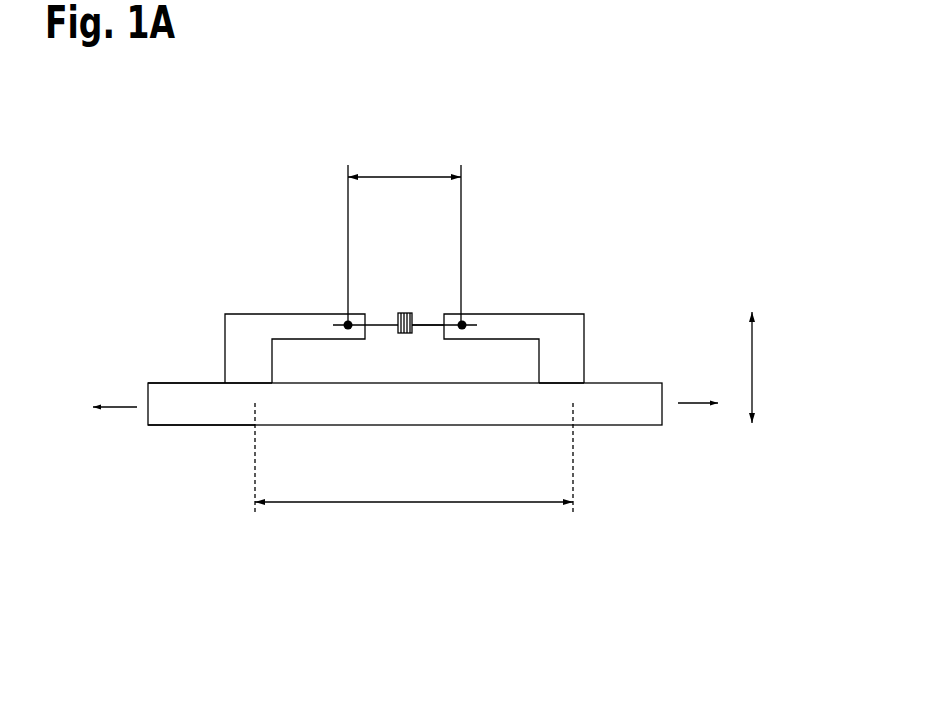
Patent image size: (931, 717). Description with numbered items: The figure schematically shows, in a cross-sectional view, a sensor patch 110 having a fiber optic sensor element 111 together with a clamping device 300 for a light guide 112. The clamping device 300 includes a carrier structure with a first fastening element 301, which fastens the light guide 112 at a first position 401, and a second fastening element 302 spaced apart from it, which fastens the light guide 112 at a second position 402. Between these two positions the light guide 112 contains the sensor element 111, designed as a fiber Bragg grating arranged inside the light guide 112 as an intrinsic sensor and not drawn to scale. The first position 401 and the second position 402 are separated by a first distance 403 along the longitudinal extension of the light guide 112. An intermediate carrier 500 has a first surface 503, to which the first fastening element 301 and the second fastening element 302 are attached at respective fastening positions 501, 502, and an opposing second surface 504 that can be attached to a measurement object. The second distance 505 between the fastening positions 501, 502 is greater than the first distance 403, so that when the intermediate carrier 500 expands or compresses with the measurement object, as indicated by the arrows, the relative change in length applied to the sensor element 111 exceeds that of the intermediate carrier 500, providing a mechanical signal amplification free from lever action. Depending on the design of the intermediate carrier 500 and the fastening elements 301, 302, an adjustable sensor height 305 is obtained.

The sensor patch 110 is at (150, 203).
The clamping device 300 is at (333, 208).
The first fastening element 301 is at (258, 330).
The second fastening element 302 is at (565, 328).
The sensor height 305 is at (753, 348).
The first position 401 is at (344, 321).
The second position 402 is at (466, 321).
The first distance 403 is at (428, 177).
The sensor element 111 is at (400, 313).
The light guide 112 is at (422, 313).
The intermediate carrier 500 is at (625, 405).
The first fastening position 501 is at (248, 378).
The second fastening position 502 is at (562, 380).
The first surface 503 is at (172, 382).
The second surface 504 is at (195, 428).
The second distance 505 is at (350, 505).